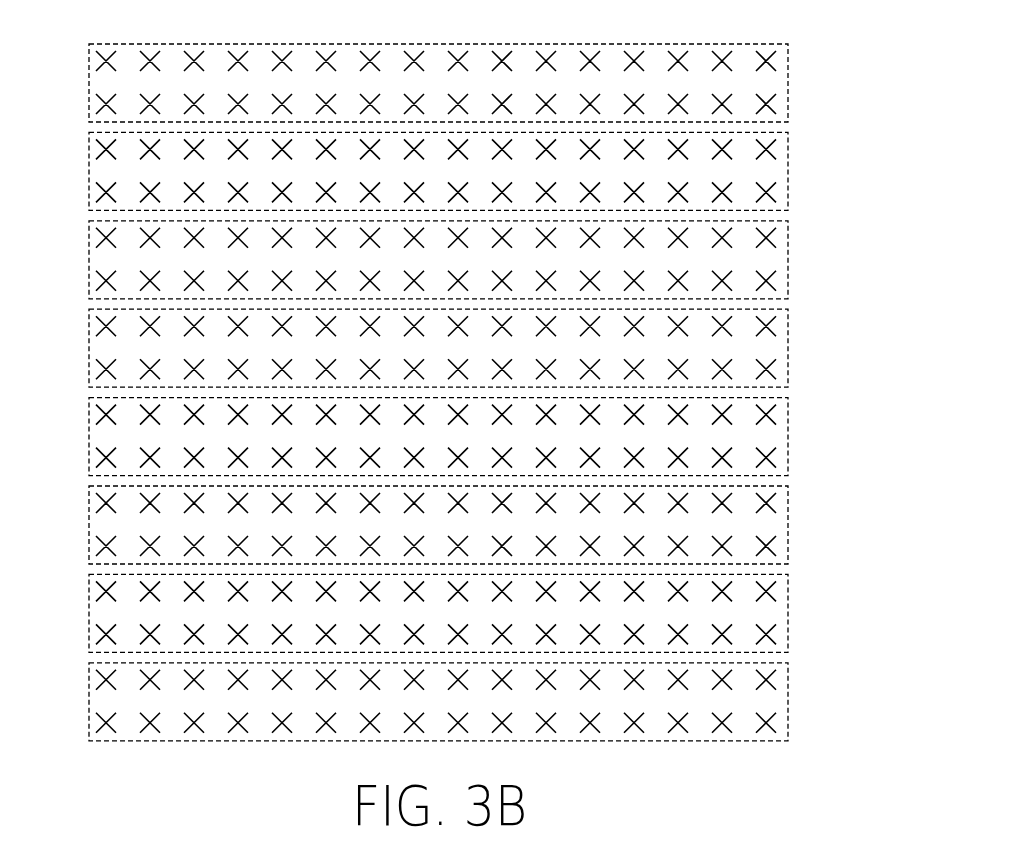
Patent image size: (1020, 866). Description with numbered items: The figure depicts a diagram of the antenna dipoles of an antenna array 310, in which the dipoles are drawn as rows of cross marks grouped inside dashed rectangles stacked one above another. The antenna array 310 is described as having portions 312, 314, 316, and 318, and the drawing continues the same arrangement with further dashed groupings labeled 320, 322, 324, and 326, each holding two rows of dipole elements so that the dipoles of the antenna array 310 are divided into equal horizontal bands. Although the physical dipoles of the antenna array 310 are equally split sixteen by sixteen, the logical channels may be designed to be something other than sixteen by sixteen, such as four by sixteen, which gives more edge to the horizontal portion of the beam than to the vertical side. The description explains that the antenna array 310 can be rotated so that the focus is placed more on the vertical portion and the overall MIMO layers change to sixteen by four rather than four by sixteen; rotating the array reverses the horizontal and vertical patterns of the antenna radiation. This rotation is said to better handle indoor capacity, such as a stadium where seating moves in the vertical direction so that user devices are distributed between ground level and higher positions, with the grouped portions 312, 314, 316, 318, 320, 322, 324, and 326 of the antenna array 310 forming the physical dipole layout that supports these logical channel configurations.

The antenna array 310 is at (851, 80).
The portion 312 is at (89, 82).
The portion 314 is at (89, 170).
The portion 316 is at (89, 259).
The portion 318 is at (89, 347).
The fifth pixel row group 320 is at (89, 436).
The sixth pixel row group 322 is at (89, 524).
The seventh pixel row group 324 is at (89, 612).
The eighth pixel row group 326 is at (89, 701).